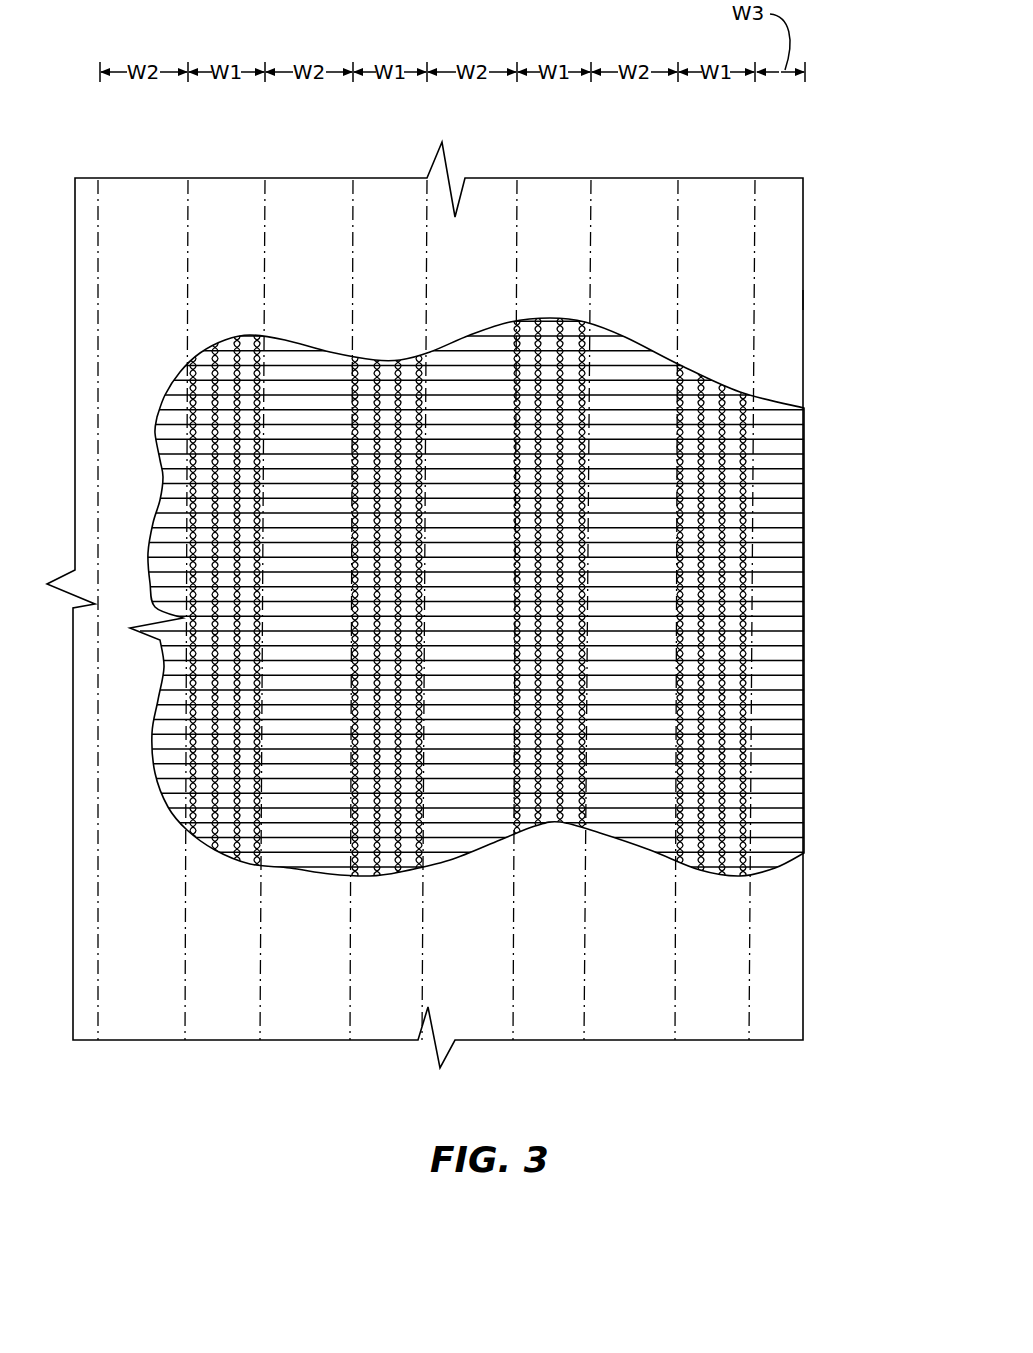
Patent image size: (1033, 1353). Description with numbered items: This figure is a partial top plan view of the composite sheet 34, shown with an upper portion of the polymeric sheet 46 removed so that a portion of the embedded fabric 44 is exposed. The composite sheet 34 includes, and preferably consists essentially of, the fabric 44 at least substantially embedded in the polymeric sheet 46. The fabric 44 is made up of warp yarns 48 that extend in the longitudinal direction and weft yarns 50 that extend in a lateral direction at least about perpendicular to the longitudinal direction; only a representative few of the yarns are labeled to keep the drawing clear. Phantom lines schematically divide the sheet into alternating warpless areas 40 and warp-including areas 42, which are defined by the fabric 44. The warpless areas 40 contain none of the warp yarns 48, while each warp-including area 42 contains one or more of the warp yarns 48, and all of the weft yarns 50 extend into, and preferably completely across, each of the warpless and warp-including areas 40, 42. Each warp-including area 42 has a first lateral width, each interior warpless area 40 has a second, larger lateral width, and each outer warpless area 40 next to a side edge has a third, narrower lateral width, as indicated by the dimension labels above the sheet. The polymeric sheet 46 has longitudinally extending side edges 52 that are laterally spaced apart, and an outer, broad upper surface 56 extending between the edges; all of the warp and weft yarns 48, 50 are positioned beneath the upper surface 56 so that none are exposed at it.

The composite sheet 34 is at (62, 163).
The warpless areas 40 is at (145, 1044).
The warp-including areas 42 is at (83, 1044).
The fabric 44 is at (479, 594).
The polymeric sheet 46 is at (783, 245).
The warp yarns 48 is at (218, 305).
The weft yarns 50 is at (310, 362).
The side edges 52 is at (805, 300).
The upper surface 56 is at (140, 862).